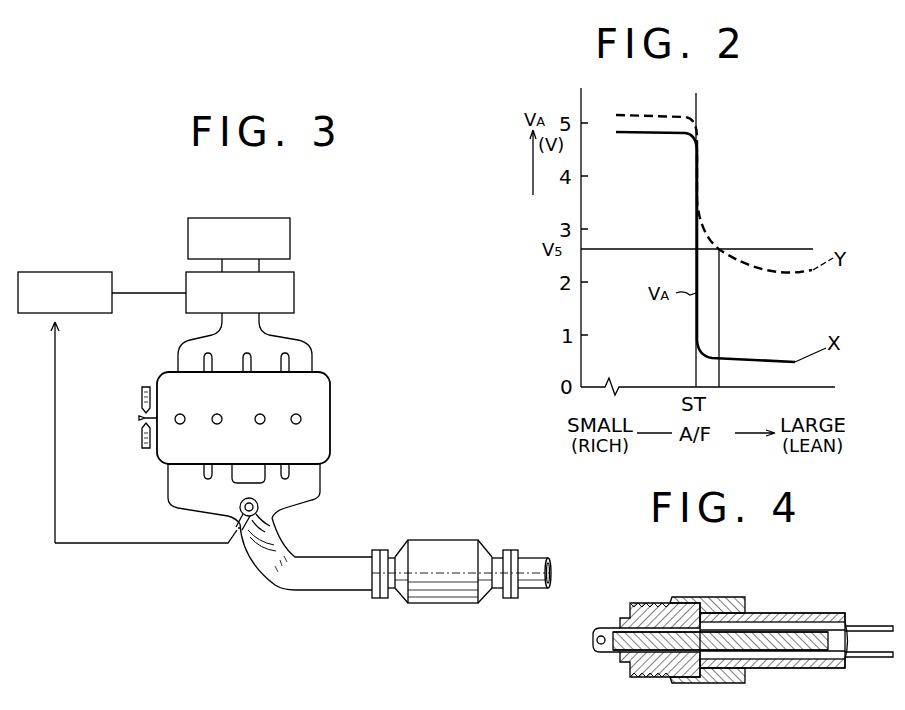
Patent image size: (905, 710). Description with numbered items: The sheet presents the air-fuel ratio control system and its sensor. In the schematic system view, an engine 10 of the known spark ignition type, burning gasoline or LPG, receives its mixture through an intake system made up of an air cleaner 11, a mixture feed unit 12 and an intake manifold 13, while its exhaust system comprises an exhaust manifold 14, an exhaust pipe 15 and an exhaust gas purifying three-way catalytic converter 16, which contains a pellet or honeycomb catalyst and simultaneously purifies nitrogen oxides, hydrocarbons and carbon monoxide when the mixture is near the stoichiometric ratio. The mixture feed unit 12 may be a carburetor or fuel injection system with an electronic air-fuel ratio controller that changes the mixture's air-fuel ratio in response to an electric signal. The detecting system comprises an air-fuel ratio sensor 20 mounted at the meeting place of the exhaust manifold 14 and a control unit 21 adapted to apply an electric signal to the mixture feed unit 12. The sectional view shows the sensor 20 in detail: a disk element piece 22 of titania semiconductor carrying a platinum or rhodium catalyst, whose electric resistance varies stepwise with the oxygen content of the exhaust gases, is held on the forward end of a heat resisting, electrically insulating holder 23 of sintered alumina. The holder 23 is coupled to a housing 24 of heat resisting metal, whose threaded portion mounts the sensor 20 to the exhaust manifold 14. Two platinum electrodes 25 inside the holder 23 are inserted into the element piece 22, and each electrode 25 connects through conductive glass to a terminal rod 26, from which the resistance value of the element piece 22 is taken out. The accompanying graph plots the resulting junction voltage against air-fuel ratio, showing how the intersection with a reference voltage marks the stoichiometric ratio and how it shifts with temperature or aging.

In FIG. 3, the engine 10 is at (327, 432).
In FIG. 3, the air cleaner 11 is at (292, 239).
In FIG. 3, the mixture feed unit 12 is at (294, 294).
In FIG. 3, the intake manifold 13 is at (310, 352).
In FIG. 3, the exhaust manifold 14 is at (317, 503).
In FIG. 3, the exhaust pipe 15 is at (325, 578).
In FIG. 3, the three-way catalytic converter 16 is at (453, 545).
In FIG. 3, the air-fuel ratio sensor 20 is at (235, 530).
In FIG. 3, the control unit 21 is at (80, 313).
In FIG. 4, the disk element piece 22 is at (603, 628).
In FIG. 4, the holder 23 is at (792, 613).
In FIG. 4, the housing 24 is at (730, 597).
In FIG. 4, the platinum electrodes 25 is at (660, 603).
In FIG. 4, the terminal rod 26 is at (870, 626).